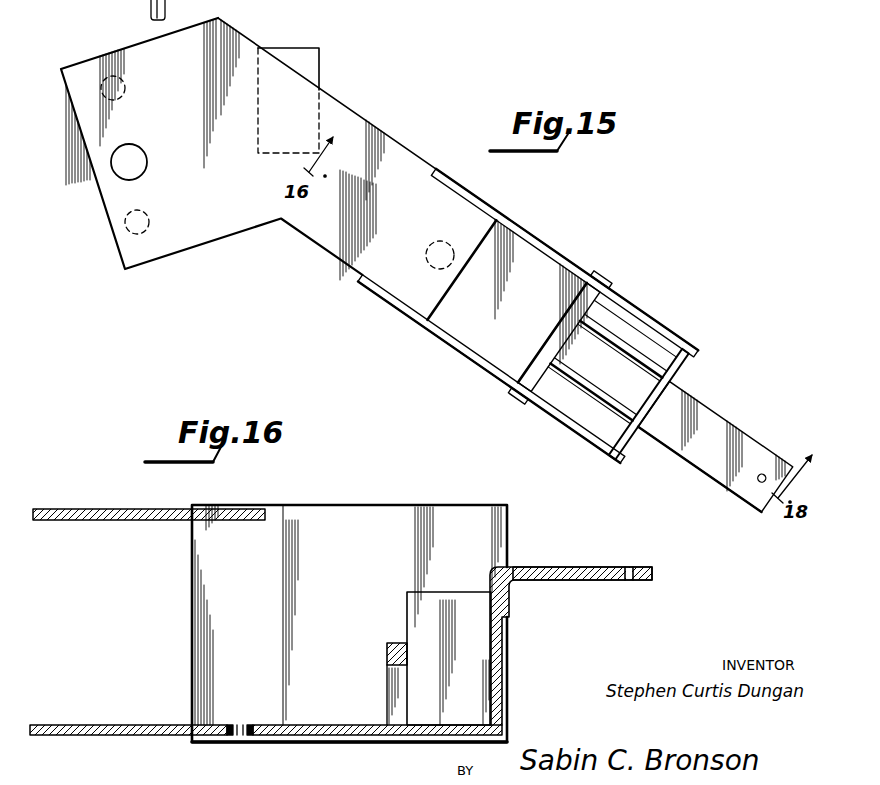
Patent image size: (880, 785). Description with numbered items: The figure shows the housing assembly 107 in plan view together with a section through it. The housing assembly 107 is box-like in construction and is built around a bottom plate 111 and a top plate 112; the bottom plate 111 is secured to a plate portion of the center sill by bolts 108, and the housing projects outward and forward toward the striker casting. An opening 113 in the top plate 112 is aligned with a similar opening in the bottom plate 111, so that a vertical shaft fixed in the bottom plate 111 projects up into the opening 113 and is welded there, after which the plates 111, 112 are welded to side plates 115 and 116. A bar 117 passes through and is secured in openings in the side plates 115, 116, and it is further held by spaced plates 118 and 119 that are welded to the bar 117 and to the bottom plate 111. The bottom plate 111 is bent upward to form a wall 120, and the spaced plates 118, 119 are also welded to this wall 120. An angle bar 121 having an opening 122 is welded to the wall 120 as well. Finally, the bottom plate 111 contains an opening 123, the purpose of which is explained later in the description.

In FIG. 15, the housing assembly 107 is at (544, 231).
In FIG. 16, the housing assembly 107 is at (323, 504).
In FIG. 15, the bolts 108 is at (125, 86).
In FIG. 16, the bottom plate 111 is at (113, 736).
In FIG. 15, the top plate 112 is at (368, 137).
In FIG. 16, the top plate 112 is at (100, 522).
In FIG. 15, the opening 113 is at (147, 158).
In FIG. 15, the side plate 115 is at (575, 257).
In FIG. 16, the side plate 115 is at (423, 505).
In FIG. 15, the side plate 116 is at (446, 353).
In FIG. 15, the bar 117 is at (535, 370).
In FIG. 16, the bar 117 is at (387, 652).
In FIG. 15, the spaced plate 118 is at (637, 346).
In FIG. 16, the spaced plate 118 is at (464, 578).
In FIG. 15, the spaced plate 119 is at (582, 387).
In FIG. 15, the wall 120 is at (684, 369).
In FIG. 16, the wall 120 is at (502, 654).
In FIG. 15, the angle bar 121 is at (750, 440).
In FIG. 16, the angle bar 121 is at (567, 550).
In FIG. 15, the opening 122 is at (758, 483).
In FIG. 16, the opening 122 is at (641, 550).
In FIG. 15, the opening 123 is at (437, 242).
In FIG. 16, the opening 123 is at (254, 726).